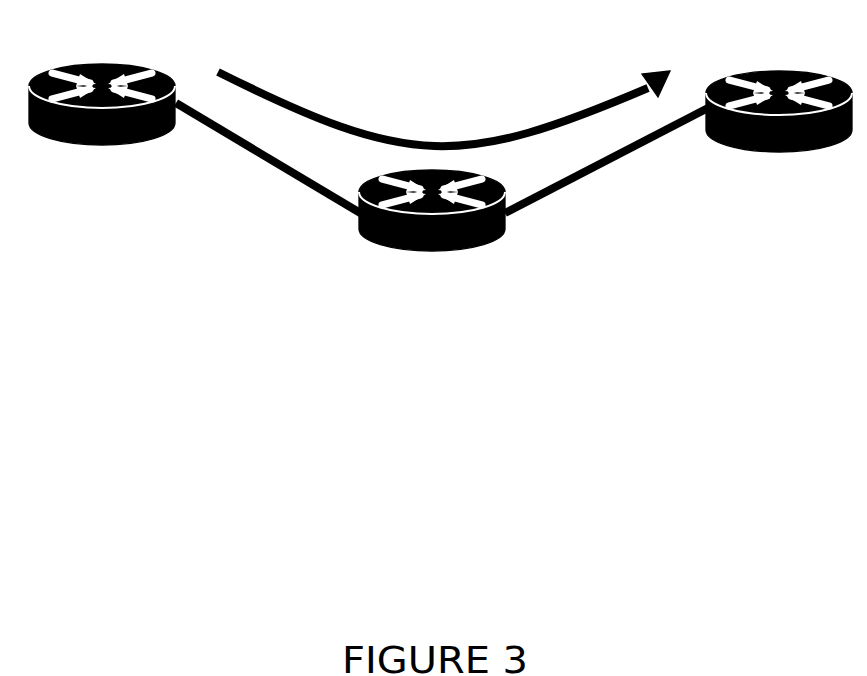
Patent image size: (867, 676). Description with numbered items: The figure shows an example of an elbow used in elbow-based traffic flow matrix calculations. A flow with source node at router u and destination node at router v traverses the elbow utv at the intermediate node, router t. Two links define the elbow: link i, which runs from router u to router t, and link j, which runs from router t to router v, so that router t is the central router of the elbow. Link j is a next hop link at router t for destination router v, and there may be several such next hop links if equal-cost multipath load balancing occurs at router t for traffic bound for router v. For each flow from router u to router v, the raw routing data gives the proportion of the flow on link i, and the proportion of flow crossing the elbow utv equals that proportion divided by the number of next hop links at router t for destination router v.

The router u is at (128, 65).
The router t is at (462, 247).
The router v is at (807, 73).
The link i is at (254, 154).
The link j is at (672, 138).
The elbow utv is at (444, 108).